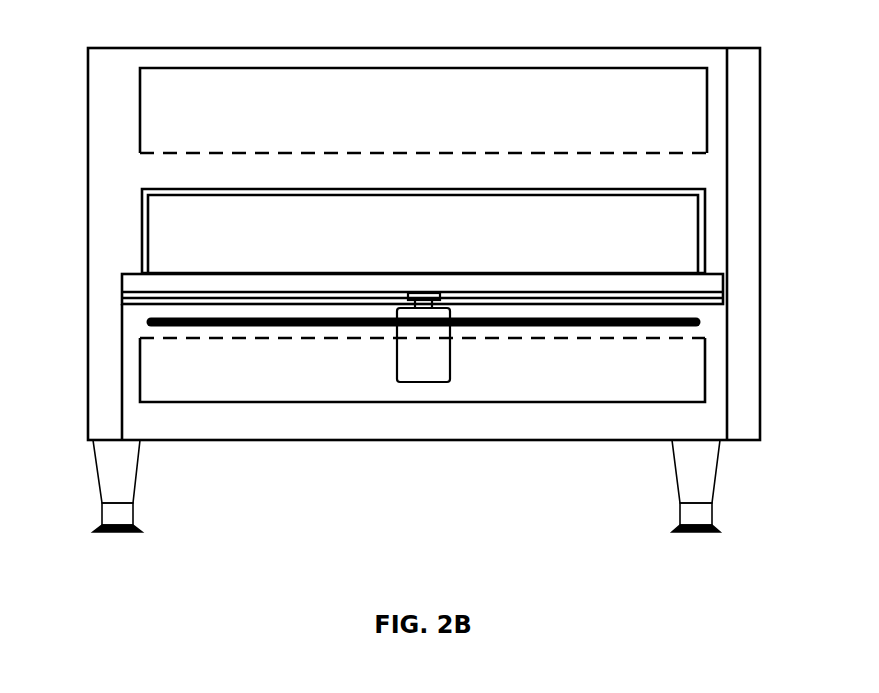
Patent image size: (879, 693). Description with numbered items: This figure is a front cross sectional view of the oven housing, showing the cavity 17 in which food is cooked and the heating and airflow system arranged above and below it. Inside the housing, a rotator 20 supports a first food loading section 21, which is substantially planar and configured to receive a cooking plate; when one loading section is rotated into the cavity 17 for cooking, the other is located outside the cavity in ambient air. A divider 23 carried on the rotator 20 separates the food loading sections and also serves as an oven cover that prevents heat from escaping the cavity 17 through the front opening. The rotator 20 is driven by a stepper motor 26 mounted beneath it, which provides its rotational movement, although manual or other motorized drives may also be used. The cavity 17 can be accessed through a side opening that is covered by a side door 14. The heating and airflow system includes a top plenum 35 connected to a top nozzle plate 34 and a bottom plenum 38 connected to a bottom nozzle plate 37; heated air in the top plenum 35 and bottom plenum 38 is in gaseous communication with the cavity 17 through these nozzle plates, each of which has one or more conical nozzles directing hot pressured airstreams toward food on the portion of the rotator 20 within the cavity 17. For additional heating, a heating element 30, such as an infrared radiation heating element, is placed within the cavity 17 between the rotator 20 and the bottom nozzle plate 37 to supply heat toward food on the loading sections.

The side door 14 is at (749, 83).
The cavity 17 is at (400, 176).
The rotator 20 is at (682, 282).
The first food loading section 21 is at (238, 271).
The divider 23 is at (423, 231).
The stepper motor 26 is at (423, 337).
The heating element 30 is at (143, 322).
The top nozzle plate 34 is at (490, 151).
The top plenum 35 is at (423, 110).
The bottom nozzle plate 37 is at (609, 340).
The bottom plenum 38 is at (422, 370).